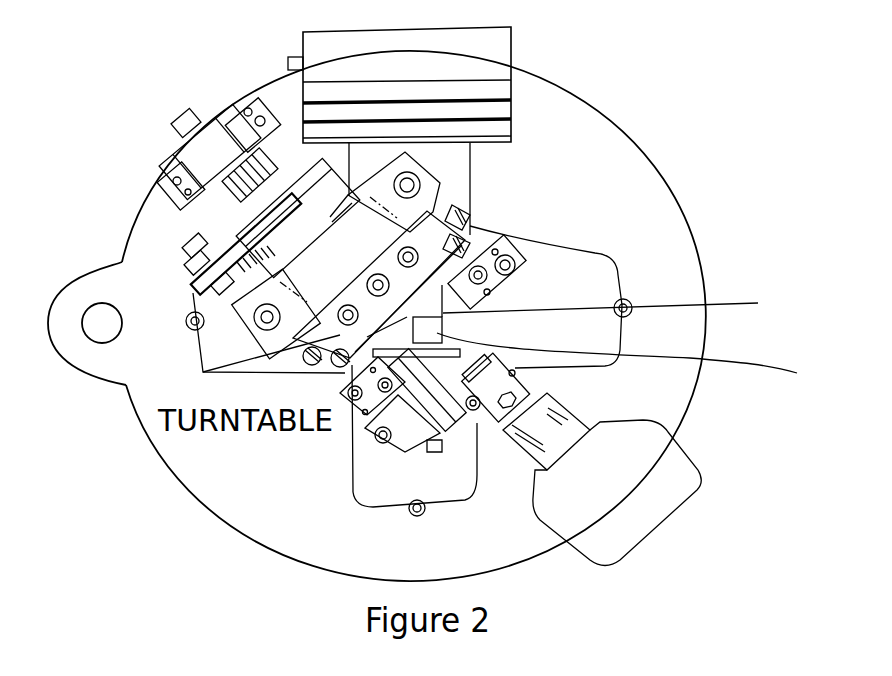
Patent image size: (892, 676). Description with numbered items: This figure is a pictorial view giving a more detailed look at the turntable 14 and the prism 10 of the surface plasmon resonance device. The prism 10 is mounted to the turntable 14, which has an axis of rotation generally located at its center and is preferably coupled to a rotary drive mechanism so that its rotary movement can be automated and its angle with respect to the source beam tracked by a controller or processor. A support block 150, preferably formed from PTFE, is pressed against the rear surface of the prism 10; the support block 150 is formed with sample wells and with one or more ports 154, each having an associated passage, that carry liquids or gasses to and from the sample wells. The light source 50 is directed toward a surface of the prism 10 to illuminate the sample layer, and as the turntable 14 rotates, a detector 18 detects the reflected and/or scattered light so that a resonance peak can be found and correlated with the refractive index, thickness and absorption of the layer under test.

The prism 10 is at (598, 335).
The turntable 14 is at (570, 147).
The detector 18 is at (443, 333).
The light source 50 is at (758, 303).
The support block 150 is at (203, 372).
The port 154 is at (473, 237).